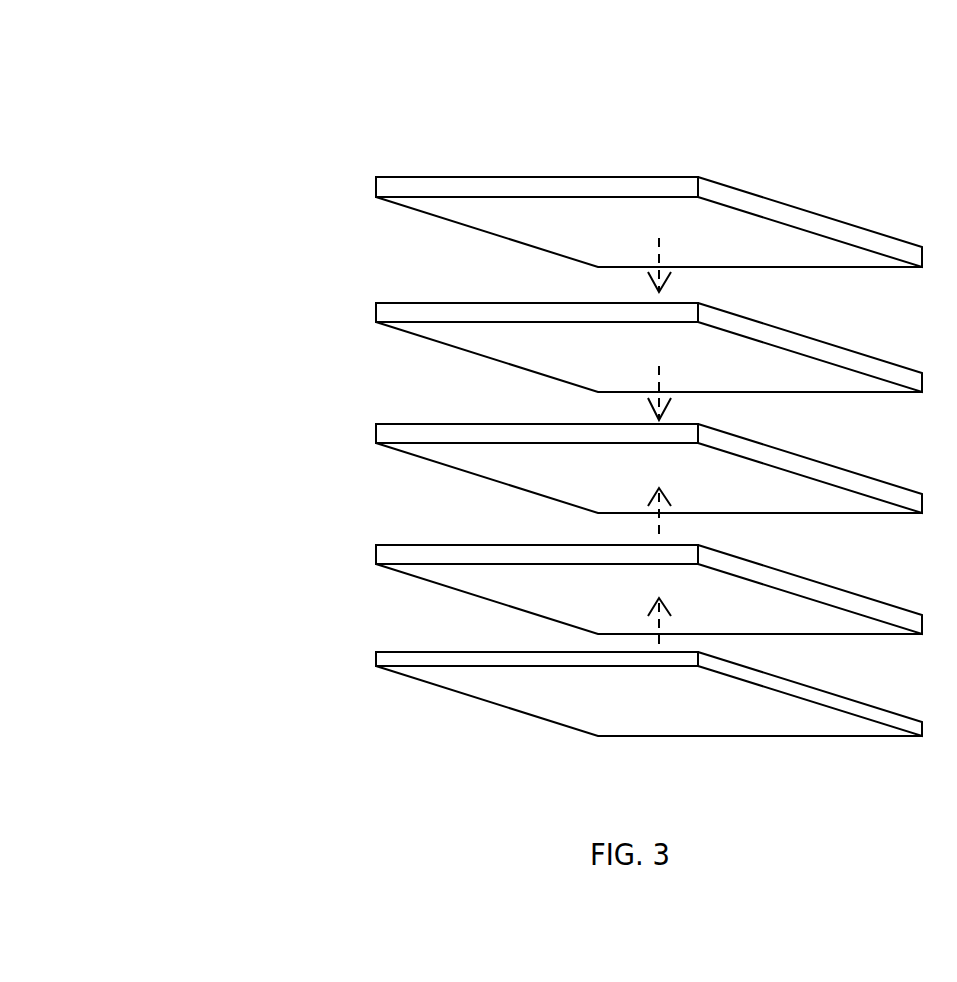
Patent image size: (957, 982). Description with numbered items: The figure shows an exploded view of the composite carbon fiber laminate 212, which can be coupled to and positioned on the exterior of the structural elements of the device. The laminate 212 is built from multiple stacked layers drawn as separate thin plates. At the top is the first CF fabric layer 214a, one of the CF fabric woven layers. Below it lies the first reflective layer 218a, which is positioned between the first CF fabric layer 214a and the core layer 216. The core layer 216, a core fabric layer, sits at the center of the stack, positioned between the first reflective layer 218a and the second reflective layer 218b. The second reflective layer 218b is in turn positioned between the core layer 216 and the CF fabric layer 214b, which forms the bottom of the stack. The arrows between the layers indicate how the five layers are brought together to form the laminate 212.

The composite carbon fiber laminate 212 is at (182, 40).
The first CF fabric layer 214a is at (376, 177).
The first reflective layer 218a is at (376, 303).
The core layer 216 is at (376, 424).
The second reflective layer 218b is at (376, 545).
The CF fabric layer 214b is at (376, 652).